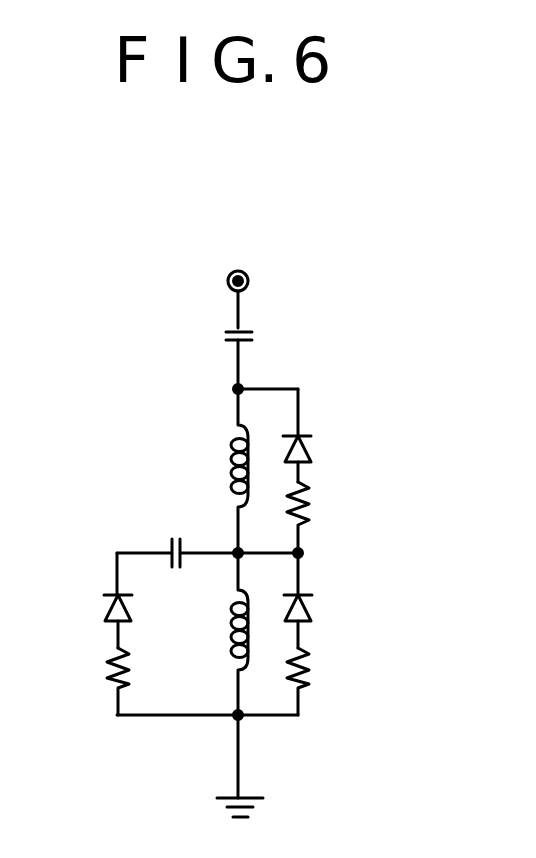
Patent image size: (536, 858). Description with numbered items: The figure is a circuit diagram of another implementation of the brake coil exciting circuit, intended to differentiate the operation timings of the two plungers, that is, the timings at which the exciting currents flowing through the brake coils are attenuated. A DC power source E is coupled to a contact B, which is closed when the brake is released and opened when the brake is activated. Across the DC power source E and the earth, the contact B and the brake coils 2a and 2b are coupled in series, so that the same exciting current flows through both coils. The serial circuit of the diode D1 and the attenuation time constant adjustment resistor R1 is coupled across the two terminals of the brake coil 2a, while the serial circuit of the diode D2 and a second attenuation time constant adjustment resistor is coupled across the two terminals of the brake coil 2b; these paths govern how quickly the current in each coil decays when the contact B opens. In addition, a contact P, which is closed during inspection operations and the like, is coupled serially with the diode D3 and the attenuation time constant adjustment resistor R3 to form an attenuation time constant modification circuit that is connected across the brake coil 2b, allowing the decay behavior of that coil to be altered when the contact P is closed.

The DC power source E is at (255, 296).
The contact B is at (255, 353).
The brake coil 2a is at (206, 471).
The brake coil 2b is at (208, 634).
The diode D1 is at (325, 456).
The attenuation time constant adjustment resistor R1 is at (326, 517).
The contact P is at (178, 533).
The diode D2 is at (326, 620).
The diode D3 is at (142, 620).
The attenuation time constant adjustment resistor R3 is at (143, 681).